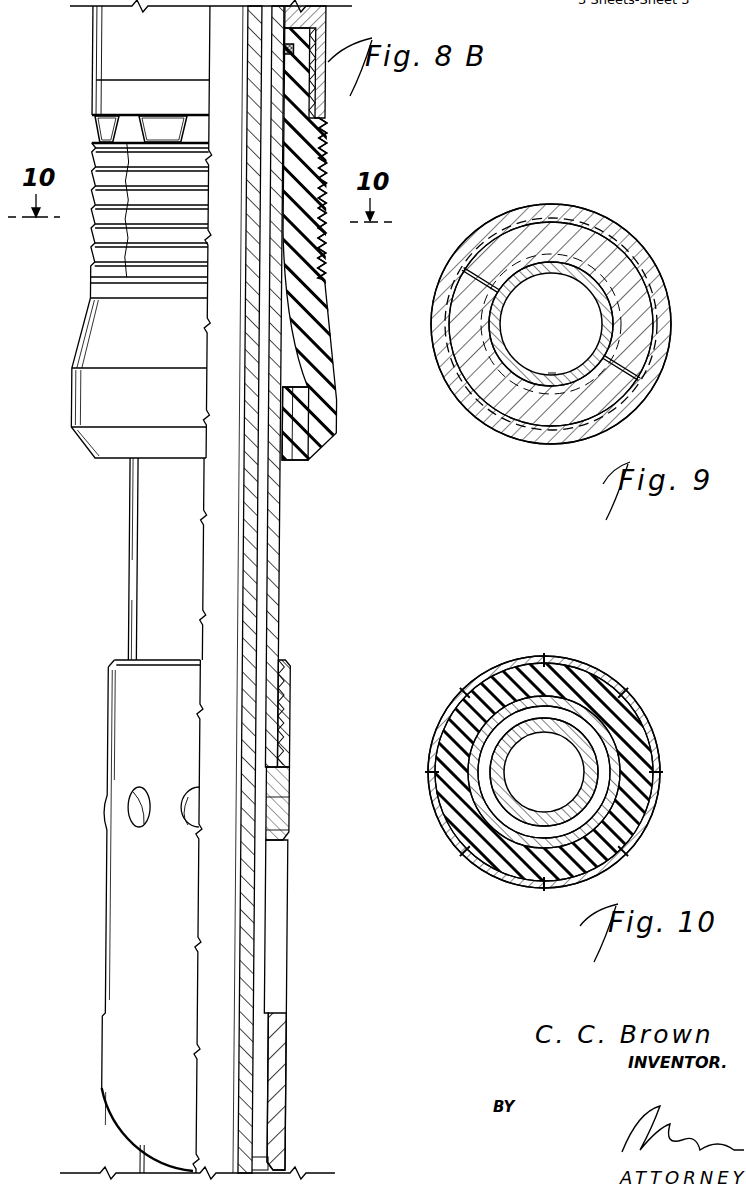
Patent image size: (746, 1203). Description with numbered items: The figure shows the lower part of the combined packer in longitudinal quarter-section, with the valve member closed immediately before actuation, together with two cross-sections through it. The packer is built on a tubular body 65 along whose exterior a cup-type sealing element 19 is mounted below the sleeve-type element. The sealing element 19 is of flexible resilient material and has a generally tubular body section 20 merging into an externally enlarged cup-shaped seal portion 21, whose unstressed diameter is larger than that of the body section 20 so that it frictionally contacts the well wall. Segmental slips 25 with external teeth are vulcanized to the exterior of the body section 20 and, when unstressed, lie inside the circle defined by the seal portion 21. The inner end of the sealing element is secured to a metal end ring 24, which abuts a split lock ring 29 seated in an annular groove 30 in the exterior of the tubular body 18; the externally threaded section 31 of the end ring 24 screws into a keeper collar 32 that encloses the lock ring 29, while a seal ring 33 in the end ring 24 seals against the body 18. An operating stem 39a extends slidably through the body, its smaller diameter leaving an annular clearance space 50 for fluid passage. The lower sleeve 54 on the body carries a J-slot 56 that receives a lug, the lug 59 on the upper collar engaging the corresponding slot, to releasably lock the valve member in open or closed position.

In FIG. 9, the tubular body 18 is at (493, 317).
In FIG. 8B, the sealing element 19 is at (373, 244).
In FIG. 8B, the body section 20 is at (299, 233).
In FIG. 10, the body section 20 is at (638, 748).
In FIG. 8B, the cup-shaped seal portion 21 is at (324, 403).
In FIG. 8B, the end ring 24 is at (323, 109).
In FIG. 8B, the segmental slips 25 is at (320, 153).
In FIG. 10, the segmental slips 25 is at (641, 713).
In FIG. 9, the split lock ring 29 is at (639, 337).
In FIG. 9, the annular groove 30 is at (553, 376).
In FIG. 9, the externally threaded section 31 is at (603, 211).
In FIG. 9, the keeper collar 32 is at (658, 295).
In FIG. 8B, the seal ring 33 is at (284, 50).
In FIG. 8B, the operating stem 39a is at (253, 98).
In FIG. 10, the operating stem 39a is at (592, 775).
In FIG. 10, the annular clearance space 50 is at (598, 805).
In FIG. 8B, the lower sleeve 54 is at (292, 726).
In FIG. 8B, the J-slot 56 is at (278, 930).
In FIG. 8B, the lug 59 is at (116, 1120).
In FIG. 8B, the tubular body 65 is at (278, 550).
In FIG. 10, the tubular body 65 is at (619, 790).